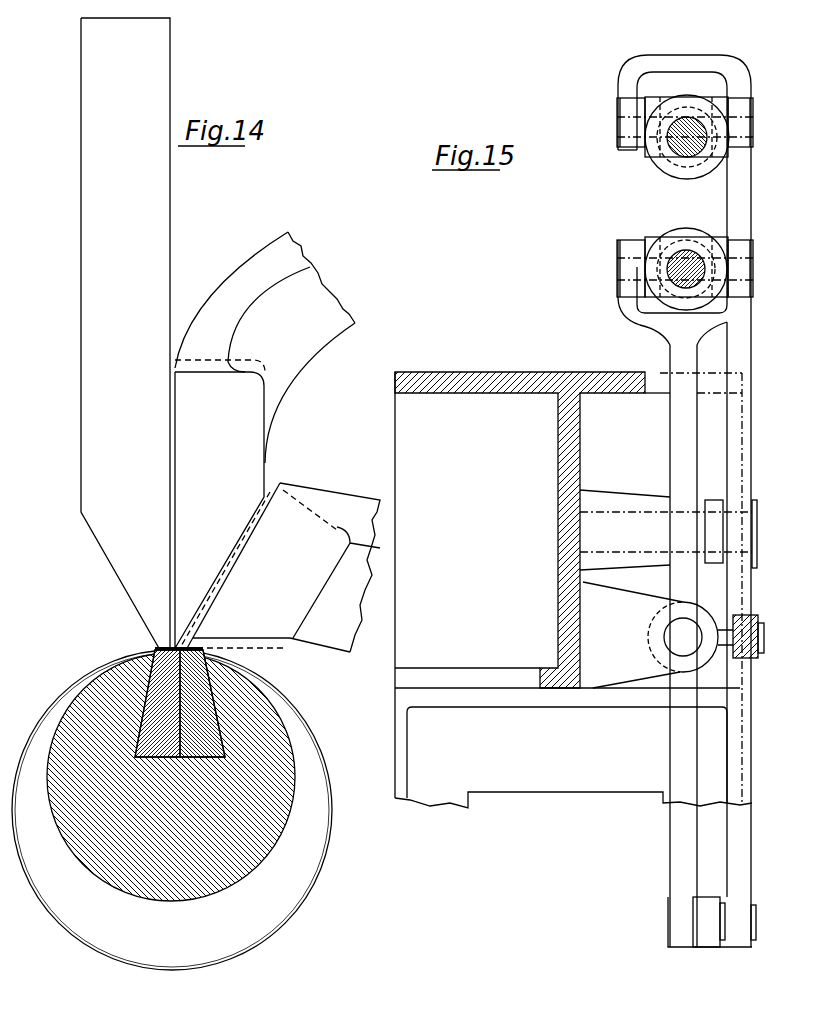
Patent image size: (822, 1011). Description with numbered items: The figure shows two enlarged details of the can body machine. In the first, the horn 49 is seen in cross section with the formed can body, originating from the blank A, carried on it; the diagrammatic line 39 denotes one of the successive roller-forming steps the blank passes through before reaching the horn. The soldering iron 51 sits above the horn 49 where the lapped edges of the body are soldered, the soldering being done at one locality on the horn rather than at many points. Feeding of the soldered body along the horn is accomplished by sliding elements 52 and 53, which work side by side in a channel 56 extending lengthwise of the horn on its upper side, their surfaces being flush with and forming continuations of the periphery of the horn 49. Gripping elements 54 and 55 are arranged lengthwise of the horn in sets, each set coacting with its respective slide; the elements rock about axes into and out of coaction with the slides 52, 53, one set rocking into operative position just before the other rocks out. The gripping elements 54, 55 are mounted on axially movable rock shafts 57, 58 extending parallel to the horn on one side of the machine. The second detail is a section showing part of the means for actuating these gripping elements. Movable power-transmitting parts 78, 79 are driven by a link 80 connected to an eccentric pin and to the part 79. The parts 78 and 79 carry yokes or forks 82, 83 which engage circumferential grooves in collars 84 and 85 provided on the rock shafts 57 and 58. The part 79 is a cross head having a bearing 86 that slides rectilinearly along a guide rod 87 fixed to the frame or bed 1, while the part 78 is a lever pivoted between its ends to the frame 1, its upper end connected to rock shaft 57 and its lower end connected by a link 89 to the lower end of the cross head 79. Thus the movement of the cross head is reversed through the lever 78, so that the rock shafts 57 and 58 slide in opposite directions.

In FIG. 15, the frame 1 is at (573, 590).
In FIG. 14, the line 39 is at (333, 832).
In FIG. 14, the horn 49 is at (245, 866).
In FIG. 14, the soldering iron 51 is at (142, 335).
In FIG. 14, the sliding element 52 is at (148, 658).
In FIG. 14, the sliding element 53 is at (213, 703).
In FIG. 14, the gripping element 54 is at (264, 486).
In FIG. 14, the gripping element 55 is at (280, 567).
In FIG. 14, the channel 56 is at (140, 686).
In FIG. 15, the rock shaft 57 is at (682, 150).
In FIG. 15, the rock shaft 58 is at (692, 252).
In FIG. 15, the power-transmitting part 78 is at (751, 174).
In FIG. 15, the power-transmitting part 79 is at (678, 450).
In FIG. 15, the link 80 is at (758, 656).
In FIG. 15, the yoke 82 is at (618, 90).
In FIG. 15, the yoke 83 is at (618, 303).
In FIG. 15, the collar 84 is at (660, 158).
In FIG. 15, the collar 85 is at (665, 238).
In FIG. 15, the bearing 86 is at (686, 603).
In FIG. 15, the guide rod 87 is at (672, 636).
In FIG. 15, the link 89 is at (705, 933).
In FIG. 14, the blank A is at (316, 878).